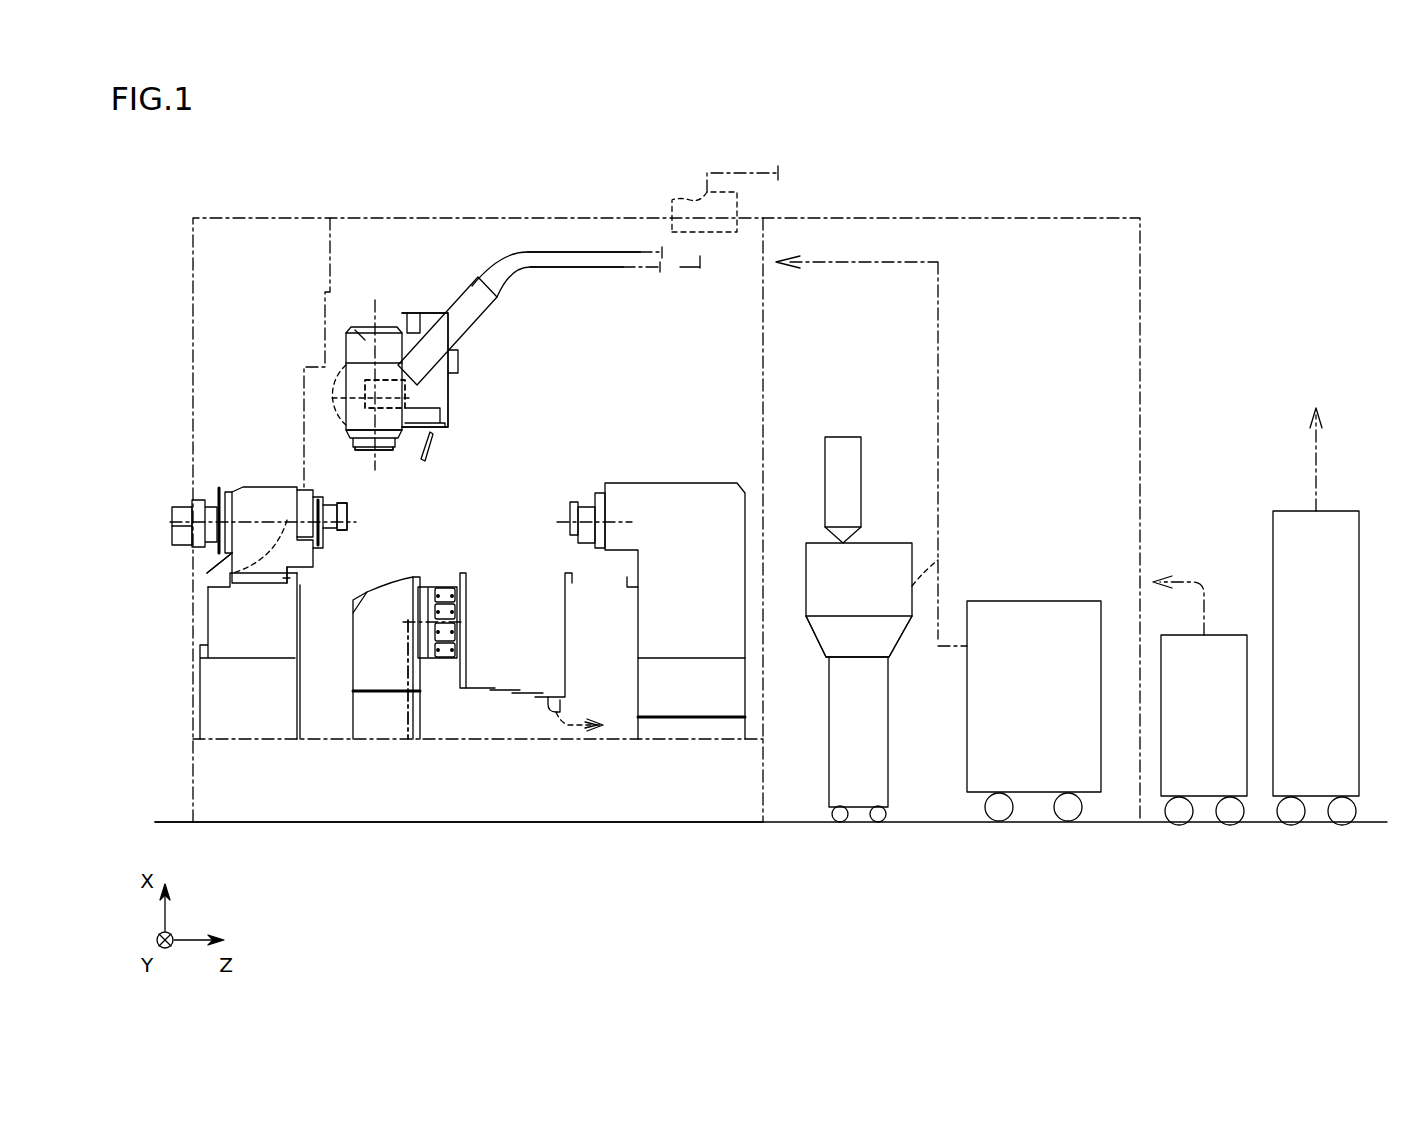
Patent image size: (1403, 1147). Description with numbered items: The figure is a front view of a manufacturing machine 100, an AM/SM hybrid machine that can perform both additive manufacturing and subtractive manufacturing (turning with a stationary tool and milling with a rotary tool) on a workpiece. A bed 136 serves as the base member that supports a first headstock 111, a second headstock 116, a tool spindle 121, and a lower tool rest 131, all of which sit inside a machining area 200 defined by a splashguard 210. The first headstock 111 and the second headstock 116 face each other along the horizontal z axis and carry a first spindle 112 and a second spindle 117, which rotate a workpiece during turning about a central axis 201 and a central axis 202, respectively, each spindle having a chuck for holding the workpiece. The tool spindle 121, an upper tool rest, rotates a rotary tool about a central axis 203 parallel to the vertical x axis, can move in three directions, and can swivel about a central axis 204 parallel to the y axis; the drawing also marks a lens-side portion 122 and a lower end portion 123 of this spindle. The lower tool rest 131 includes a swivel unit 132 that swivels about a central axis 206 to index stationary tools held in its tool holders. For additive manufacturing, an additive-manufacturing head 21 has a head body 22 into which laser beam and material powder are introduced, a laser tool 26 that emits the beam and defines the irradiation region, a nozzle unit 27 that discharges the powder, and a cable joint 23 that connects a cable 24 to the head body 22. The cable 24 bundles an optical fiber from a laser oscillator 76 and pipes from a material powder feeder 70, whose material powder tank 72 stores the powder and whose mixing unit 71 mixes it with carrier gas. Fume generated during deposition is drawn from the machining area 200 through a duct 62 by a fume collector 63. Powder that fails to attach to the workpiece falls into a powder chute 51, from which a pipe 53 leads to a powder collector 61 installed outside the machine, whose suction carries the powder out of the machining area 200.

The manufacturing machine 100 is at (181, 194).
The first headstock 111 is at (243, 484).
The first spindle 112 is at (332, 498).
The second headstock 116 is at (638, 625).
The second spindle 117 is at (587, 535).
The tool spindle 121 is at (345, 352).
The condenser lens unit 122 is at (353, 407).
The nozzle 123 is at (390, 452).
The lower tool rest 131 is at (354, 656).
The swivel unit 132 is at (443, 660).
The bed 136 is at (222, 787).
The central axis 201 is at (232, 553).
The central axis 202 is at (620, 520).
The central axis 203 is at (357, 327).
The central axis 204 is at (383, 310).
The central axis 206 is at (410, 622).
The machining area 200 is at (557, 330).
The splashguard 210 is at (460, 218).
The additive-manufacturing head 21 is at (423, 307).
The head body 22 is at (442, 372).
The cable joint 23 is at (448, 300).
The cable 24 is at (600, 258).
The laser tool 26 is at (435, 393).
The nozzle unit 27 is at (435, 449).
The powder chute 51 is at (463, 571).
The pipe 53 is at (550, 700).
The powder collector 61 is at (1167, 755).
The duct 62 is at (667, 200).
The fume collector 63 is at (1281, 755).
The material powder feeder 70 is at (799, 570).
The mixing unit 71 is at (825, 607).
The material powder tank 72 is at (844, 452).
The laser oscillator 76 is at (975, 750).